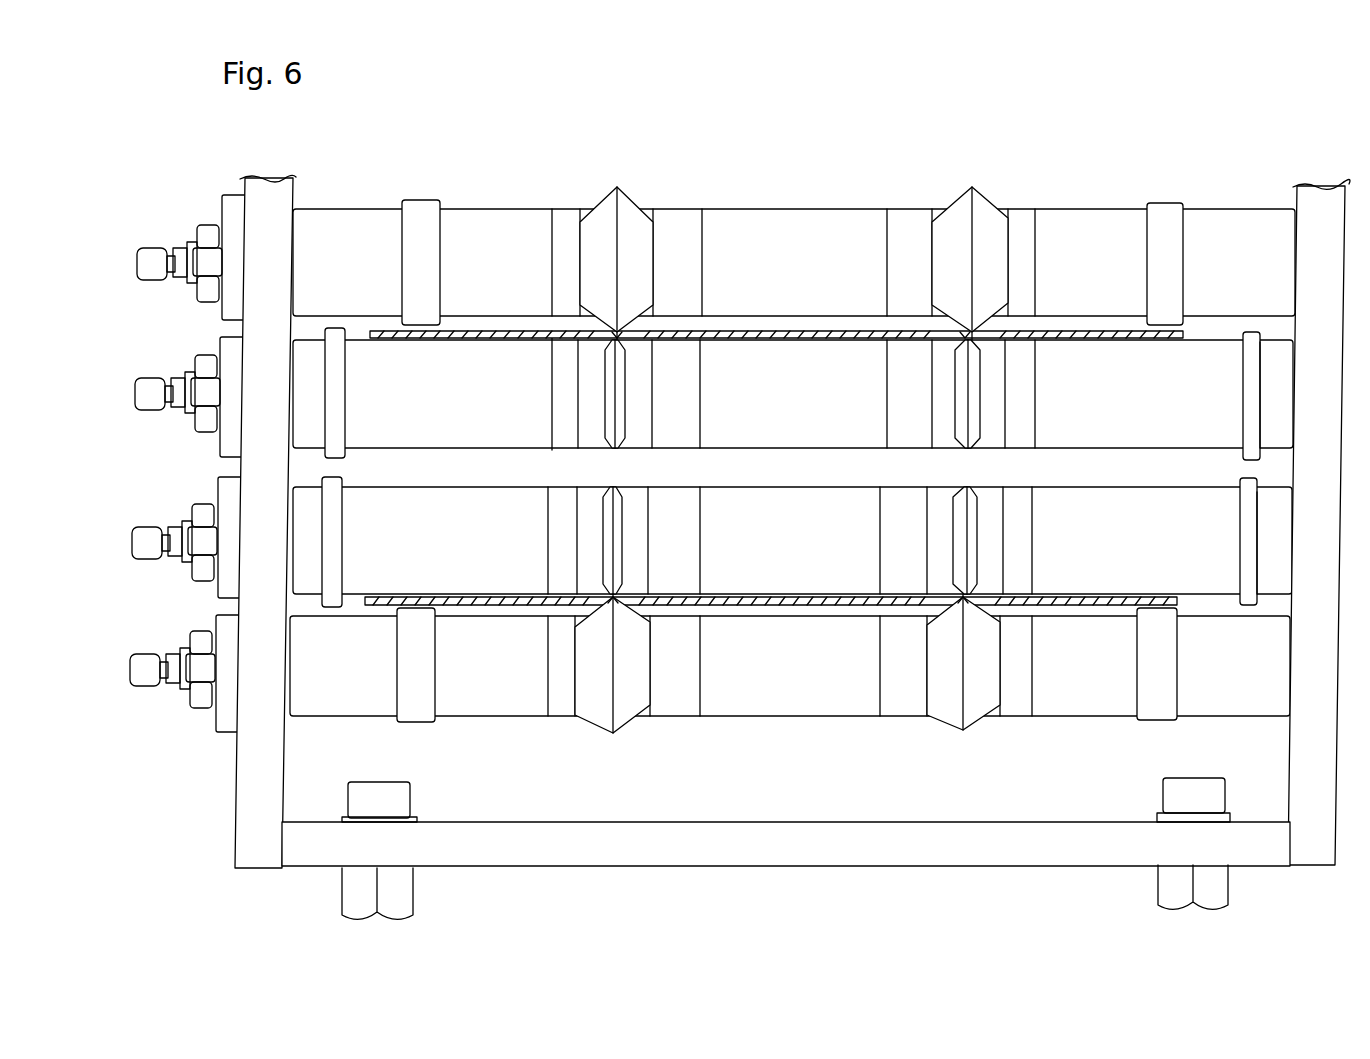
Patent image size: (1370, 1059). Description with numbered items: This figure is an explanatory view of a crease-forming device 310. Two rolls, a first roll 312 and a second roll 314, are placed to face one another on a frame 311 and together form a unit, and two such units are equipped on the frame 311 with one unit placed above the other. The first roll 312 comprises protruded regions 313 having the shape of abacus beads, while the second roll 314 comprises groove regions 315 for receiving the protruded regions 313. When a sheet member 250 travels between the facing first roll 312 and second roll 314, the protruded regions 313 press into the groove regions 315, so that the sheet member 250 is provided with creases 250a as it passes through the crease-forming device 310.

The sheet member 250 is at (527, 331).
The crease 250a is at (620, 318).
The crease-forming device 310 is at (792, 532).
The frame 311 is at (812, 843).
The first roll 312 is at (803, 275).
The protruded region 313 is at (625, 232).
The second roll 314 is at (810, 402).
The groove region 315 is at (615, 338).